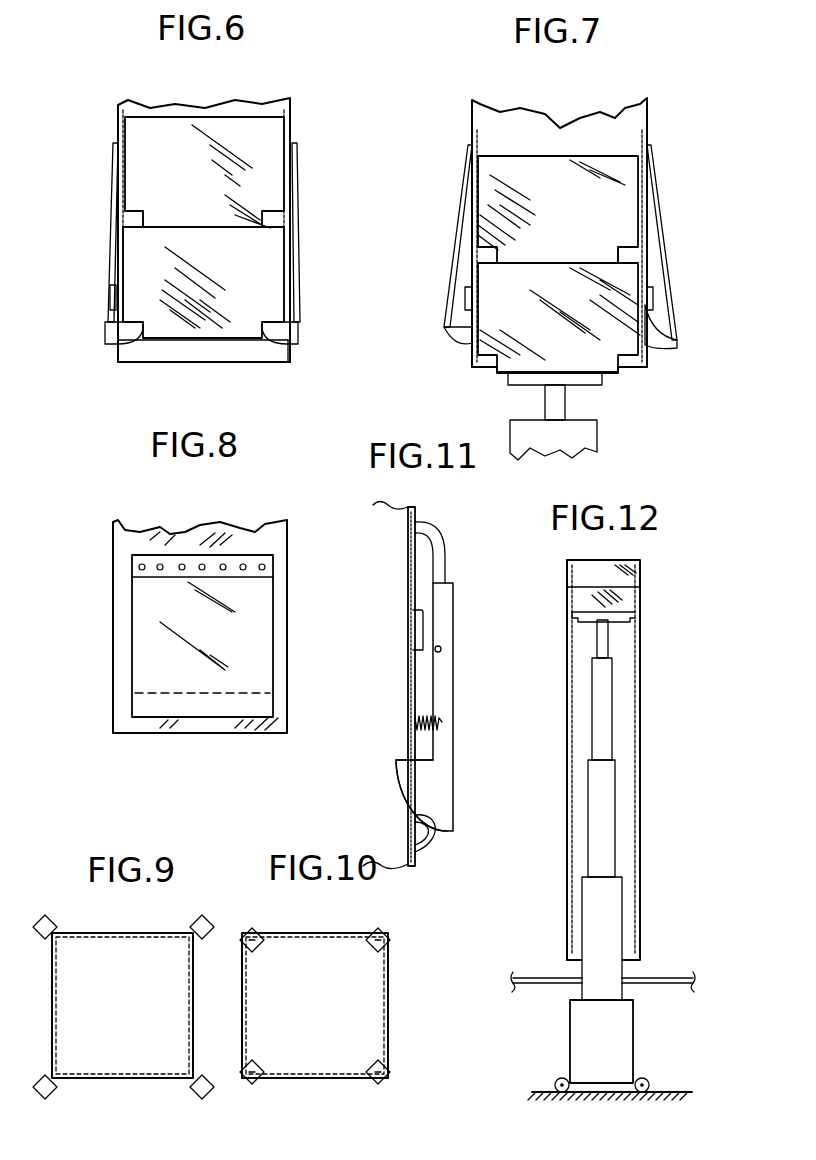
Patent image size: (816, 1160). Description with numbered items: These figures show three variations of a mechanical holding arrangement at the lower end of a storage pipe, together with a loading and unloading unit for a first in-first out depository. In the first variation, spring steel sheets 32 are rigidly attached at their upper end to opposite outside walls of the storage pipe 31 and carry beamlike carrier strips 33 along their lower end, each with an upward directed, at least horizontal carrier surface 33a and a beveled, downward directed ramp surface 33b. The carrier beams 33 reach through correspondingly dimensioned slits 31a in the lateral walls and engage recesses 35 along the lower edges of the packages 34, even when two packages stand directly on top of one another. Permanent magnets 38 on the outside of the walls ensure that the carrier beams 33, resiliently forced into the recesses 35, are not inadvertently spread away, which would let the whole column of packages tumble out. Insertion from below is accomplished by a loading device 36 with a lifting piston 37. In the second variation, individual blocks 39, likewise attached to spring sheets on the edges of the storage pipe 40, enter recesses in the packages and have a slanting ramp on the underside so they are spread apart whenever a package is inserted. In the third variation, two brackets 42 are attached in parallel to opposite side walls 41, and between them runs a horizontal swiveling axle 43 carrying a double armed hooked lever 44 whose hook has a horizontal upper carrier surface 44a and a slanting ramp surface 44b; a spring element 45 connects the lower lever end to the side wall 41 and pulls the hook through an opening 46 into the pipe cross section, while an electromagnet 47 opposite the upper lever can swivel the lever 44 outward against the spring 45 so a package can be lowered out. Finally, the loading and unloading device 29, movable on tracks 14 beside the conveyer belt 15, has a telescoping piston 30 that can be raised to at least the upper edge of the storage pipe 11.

In FIG. 12, the storage pipe 11 is at (641, 645).
In FIG. 12, the tracks 14 is at (659, 1090).
In FIG. 12, the conveyer belt 15 is at (652, 977).
In FIG. 12, the loading and unloading device 29 is at (583, 1045).
In FIG. 12, the telescoping piston 30 is at (612, 805).
In FIG. 6, the storage pipe 31 is at (291, 124).
In FIG. 7, the storage pipe 31 is at (473, 121).
In FIG. 8, the storage pipe 31 is at (265, 535).
In FIG. 6, the slits 31a is at (115, 347).
In FIG. 7, the slits 31a is at (468, 343).
In FIG. 6, the spring steel sheets 32 is at (297, 262).
In FIG. 7, the spring steel sheets 32 is at (455, 250).
In FIG. 8, the spring steel sheets 32 is at (245, 622).
In FIG. 6, the carrier strips 33 is at (125, 335).
In FIG. 7, the carrier strips 33 is at (445, 334).
In FIG. 8, the carrier strips 33 is at (252, 716).
In FIG. 6, the carrier surface 33a is at (274, 321).
In FIG. 7, the carrier surface 33a is at (657, 313).
In FIG. 6, the ramp surface 33b is at (279, 362).
In FIG. 7, the ramp surface 33b is at (658, 347).
In FIG. 6, the packages 34 is at (155, 161).
In FIG. 7, the packages 34 is at (602, 198).
In FIG. 6, the recesses 35 is at (134, 218).
In FIG. 7, the recesses 35 is at (633, 257).
In FIG. 7, the loading device 36 is at (585, 436).
In FIG. 7, the lifting piston 37 is at (560, 402).
In FIG. 6, the permanent magnets 38 is at (117, 300).
In FIG. 7, the permanent magnets 38 is at (466, 293).
In FIG. 9, the blocks 39 is at (53, 922).
In FIG. 10, the blocks 39 is at (254, 937).
In FIG. 9, the storage pipe 40 is at (242, 997).
In FIG. 10, the storage pipe 40 is at (315, 1005).
In FIG. 11, the side walls 41 is at (410, 546).
In FIG. 11, the brackets 42 is at (433, 532).
In FIG. 11, the swiveling axle 43 is at (442, 649).
In FIG. 11, the double armed hooked lever 44 is at (443, 755).
In FIG. 11, the carrier surface 44a is at (404, 758).
In FIG. 11, the ramp surface 44b is at (401, 783).
In FIG. 11, the spring element 45 is at (424, 722).
In FIG. 11, the opening 46 is at (409, 813).
In FIG. 11, the electromagnet 47 is at (413, 628).